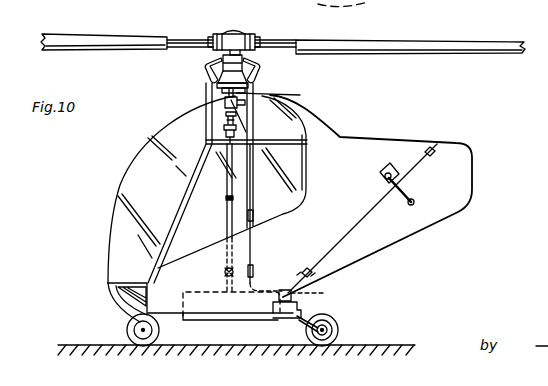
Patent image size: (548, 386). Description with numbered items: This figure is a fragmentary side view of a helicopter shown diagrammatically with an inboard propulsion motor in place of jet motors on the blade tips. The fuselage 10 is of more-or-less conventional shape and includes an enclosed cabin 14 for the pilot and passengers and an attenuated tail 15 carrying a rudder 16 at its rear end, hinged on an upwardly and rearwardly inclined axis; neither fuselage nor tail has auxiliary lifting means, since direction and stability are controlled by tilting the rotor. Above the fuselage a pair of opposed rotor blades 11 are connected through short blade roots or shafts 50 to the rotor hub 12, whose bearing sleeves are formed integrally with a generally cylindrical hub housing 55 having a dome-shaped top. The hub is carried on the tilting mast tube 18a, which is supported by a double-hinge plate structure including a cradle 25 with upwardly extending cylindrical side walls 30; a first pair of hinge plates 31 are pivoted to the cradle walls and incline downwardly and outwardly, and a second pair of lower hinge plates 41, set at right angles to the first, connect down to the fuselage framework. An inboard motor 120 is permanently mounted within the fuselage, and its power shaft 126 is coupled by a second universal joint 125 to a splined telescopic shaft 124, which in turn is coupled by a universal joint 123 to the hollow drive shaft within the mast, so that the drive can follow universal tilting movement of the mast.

The fuselage 10 is at (110, 305).
The rotor blades 11 is at (97, 35).
The rotor hub 12 is at (236, 32).
The enclosed cabin 14 is at (124, 177).
The attenuated tail 15 is at (380, 146).
The rudder 16 is at (462, 173).
The mast tube 18a is at (288, 95).
The cradle 25 is at (258, 68).
The cylindrical side walls 30 is at (223, 60).
The hinge plates 31 is at (229, 78).
The lower hinge plates 41 is at (222, 86).
The blade roots or shafts 50 is at (178, 40).
The hub housing 55 is at (248, 38).
The inboard motor 120 is at (322, 295).
The universal joint 123 is at (223, 128).
The splined telescopic shaft 124 is at (228, 207).
The second universal joint 125 is at (224, 272).
The power shaft 126 is at (259, 287).